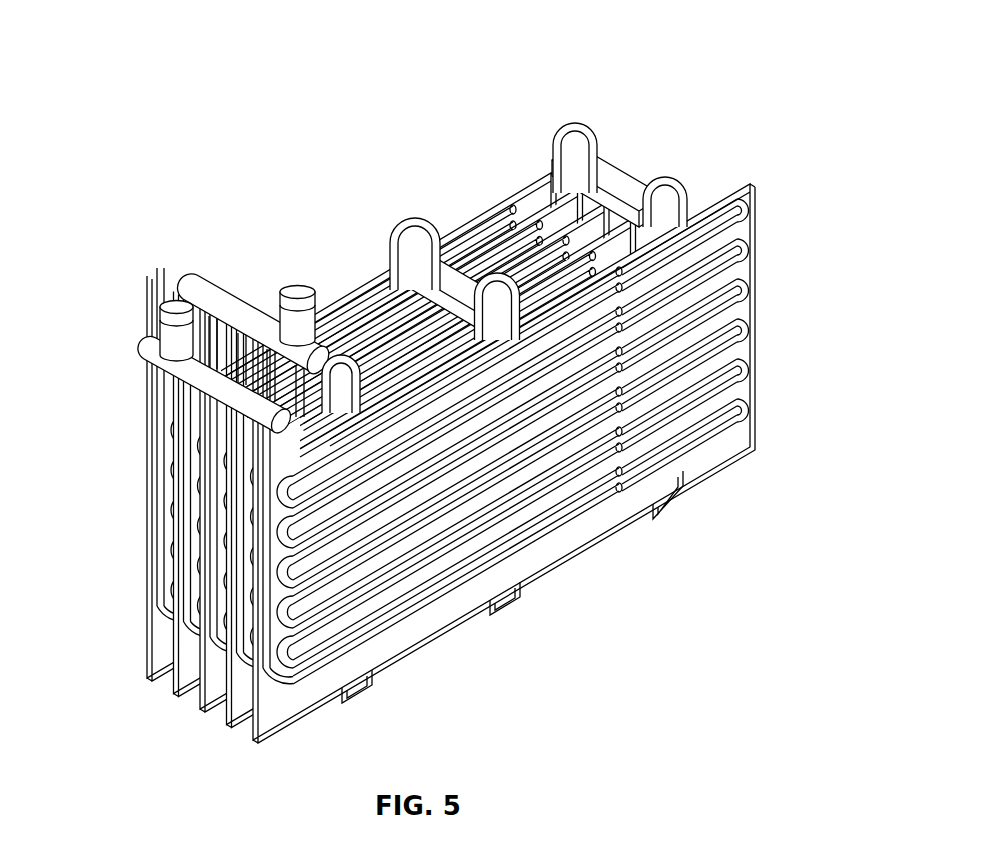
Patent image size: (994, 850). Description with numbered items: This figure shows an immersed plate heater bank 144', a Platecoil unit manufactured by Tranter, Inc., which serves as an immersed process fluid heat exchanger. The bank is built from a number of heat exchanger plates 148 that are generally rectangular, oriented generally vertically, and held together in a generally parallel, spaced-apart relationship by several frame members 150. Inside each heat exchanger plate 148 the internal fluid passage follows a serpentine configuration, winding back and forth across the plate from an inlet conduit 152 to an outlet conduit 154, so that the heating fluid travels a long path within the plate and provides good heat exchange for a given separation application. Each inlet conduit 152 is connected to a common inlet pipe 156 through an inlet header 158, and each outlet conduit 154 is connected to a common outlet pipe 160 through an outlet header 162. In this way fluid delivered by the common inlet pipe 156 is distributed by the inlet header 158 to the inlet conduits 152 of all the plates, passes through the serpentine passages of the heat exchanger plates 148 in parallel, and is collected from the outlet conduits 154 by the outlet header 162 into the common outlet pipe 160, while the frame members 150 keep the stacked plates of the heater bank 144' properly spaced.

The immersed plate heater bank 144' is at (517, 378).
The heat exchanger plate 148 is at (748, 186).
The frame member 150 is at (598, 170).
The inlet conduit 152 is at (205, 428).
The outlet conduit 154 is at (263, 353).
The common inlet pipe 156 is at (170, 307).
The inlet header 158 is at (185, 374).
The common outlet pipe 160 is at (307, 297).
The outlet header 162 is at (205, 277).